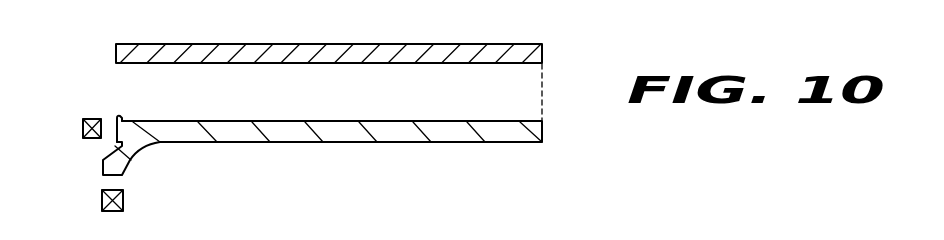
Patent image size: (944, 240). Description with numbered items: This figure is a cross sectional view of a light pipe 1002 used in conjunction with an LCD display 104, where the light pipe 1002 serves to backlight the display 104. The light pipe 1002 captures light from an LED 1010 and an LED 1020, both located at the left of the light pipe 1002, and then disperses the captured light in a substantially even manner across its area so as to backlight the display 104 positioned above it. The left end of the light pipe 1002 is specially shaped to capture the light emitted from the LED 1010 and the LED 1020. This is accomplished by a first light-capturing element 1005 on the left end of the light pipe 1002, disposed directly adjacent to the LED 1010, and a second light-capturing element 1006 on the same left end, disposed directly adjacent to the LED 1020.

The LCD display 104 is at (543, 53).
The light pipe 1002 is at (543, 134).
The first light-capturing element 1005 is at (127, 118).
The second light-capturing element 1006 is at (102, 161).
The LED 1010 is at (82, 129).
The LED 1020 is at (124, 201).